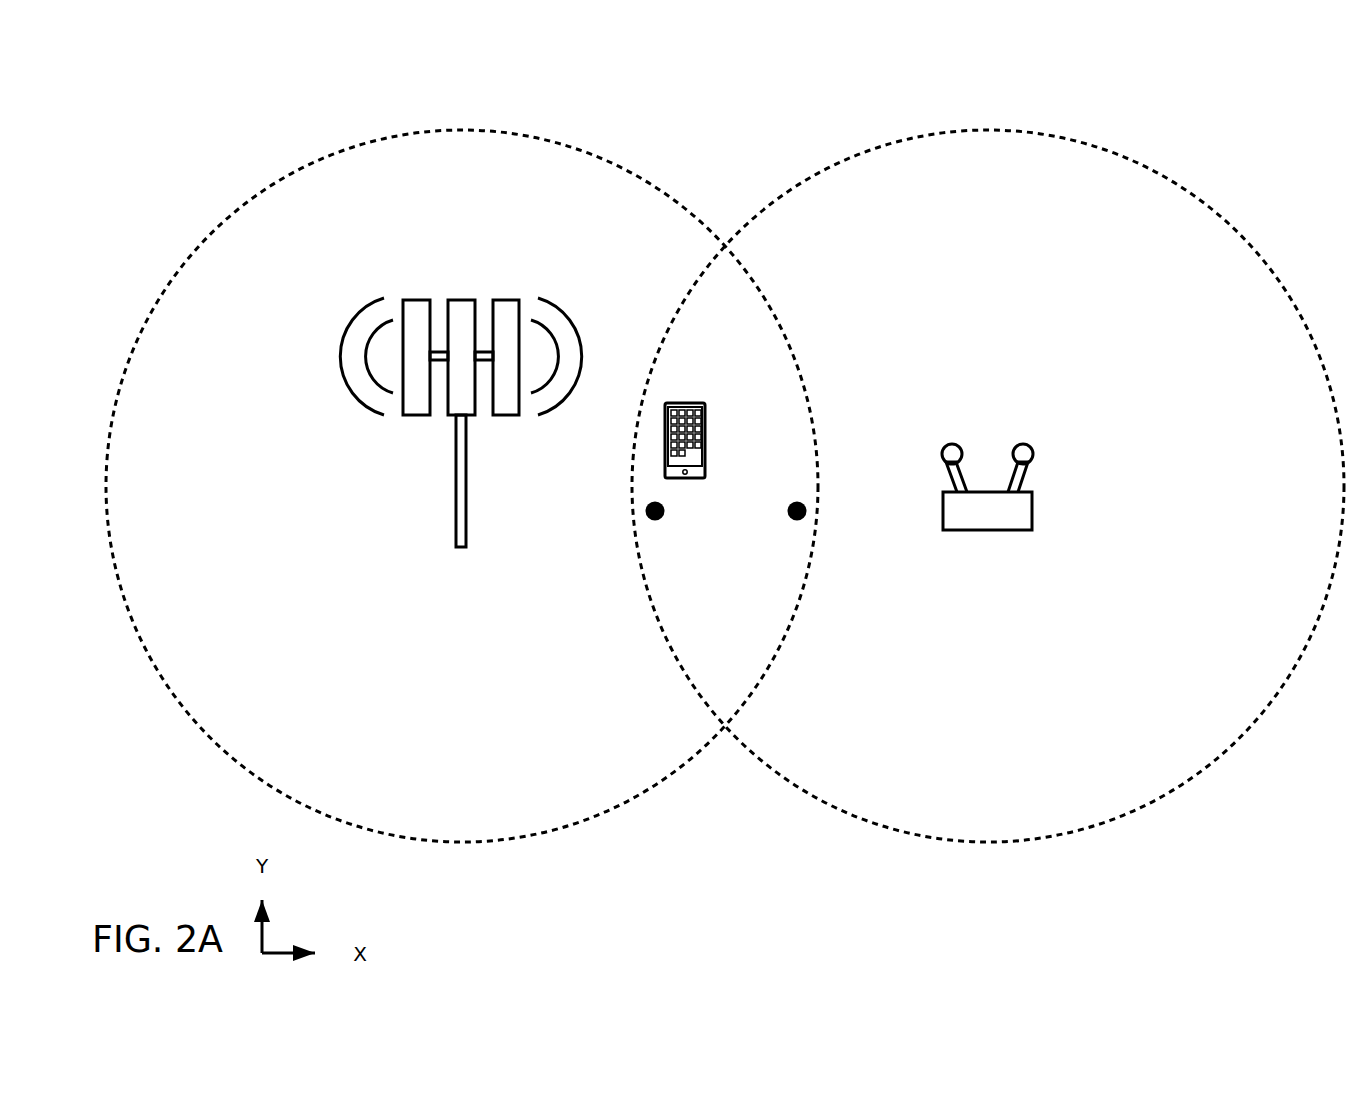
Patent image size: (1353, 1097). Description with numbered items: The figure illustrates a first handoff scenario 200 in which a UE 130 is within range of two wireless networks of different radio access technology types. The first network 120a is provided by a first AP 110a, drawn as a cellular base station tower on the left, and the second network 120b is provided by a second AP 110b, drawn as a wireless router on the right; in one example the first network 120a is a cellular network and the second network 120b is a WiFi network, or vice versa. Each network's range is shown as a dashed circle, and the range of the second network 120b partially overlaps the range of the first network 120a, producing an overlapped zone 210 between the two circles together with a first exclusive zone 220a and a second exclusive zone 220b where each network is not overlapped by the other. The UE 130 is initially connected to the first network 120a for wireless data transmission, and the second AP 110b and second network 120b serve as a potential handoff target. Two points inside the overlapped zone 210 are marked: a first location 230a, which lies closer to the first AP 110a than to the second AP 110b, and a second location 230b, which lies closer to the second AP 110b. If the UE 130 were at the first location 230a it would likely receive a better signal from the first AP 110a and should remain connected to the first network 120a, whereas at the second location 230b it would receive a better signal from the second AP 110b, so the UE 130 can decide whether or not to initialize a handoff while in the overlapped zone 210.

The handoff scenario 200 is at (230, 139).
The first network 120a is at (440, 130).
The second network 120b is at (990, 130).
The first AP 110a is at (457, 517).
The second AP 110b is at (1032, 510).
The UE 130 is at (666, 460).
The first location 230a is at (655, 522).
The second location 230b is at (797, 502).
The first exclusive zone 220a is at (513, 758).
The second exclusive zone 220b is at (974, 778).
The overlapped zone 210 is at (690, 618).